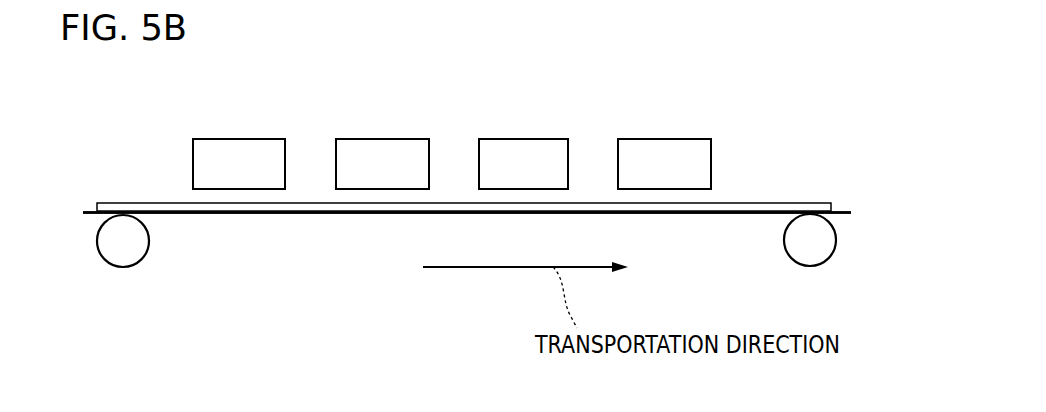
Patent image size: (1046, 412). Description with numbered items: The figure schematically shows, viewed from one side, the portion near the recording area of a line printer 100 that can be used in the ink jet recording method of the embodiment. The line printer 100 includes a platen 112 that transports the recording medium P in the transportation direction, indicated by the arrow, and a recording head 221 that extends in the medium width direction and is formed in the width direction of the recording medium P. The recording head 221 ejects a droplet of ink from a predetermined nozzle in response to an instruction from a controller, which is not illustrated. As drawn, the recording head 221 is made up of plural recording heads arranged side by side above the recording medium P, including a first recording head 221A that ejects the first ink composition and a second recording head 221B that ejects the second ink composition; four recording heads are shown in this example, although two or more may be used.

The line printer 100 is at (771, 52).
The platen 112 is at (843, 210).
The recording medium P is at (125, 210).
The recording head 221 is at (446, 124).
The first recording head 221A is at (298, 140).
The second recording head 221B is at (384, 142).